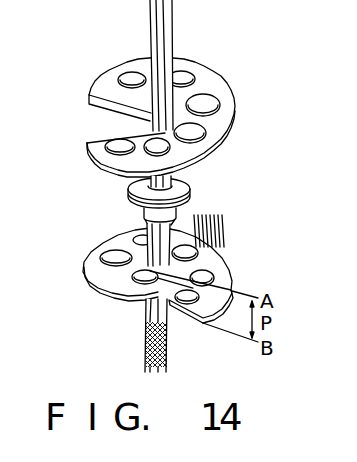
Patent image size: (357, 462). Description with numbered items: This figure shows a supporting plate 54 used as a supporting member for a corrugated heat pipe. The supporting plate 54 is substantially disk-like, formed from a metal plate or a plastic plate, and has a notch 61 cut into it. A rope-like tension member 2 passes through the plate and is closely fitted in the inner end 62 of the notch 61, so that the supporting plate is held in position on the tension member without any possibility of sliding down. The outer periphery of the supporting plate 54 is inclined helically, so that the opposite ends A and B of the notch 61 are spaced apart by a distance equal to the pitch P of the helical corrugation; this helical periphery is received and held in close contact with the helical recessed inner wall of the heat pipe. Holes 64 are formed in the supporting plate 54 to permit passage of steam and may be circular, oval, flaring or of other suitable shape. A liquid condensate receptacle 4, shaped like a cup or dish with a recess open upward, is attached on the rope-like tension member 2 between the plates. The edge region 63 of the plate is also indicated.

The rope-like tension member 2 is at (168, 15).
The liquid condensate receptacle 4 is at (139, 201).
The supporting plate 54 is at (146, 111).
The notch 61 is at (105, 111).
The inner end of notch 62 is at (182, 138).
The plate rim 63 is at (186, 142).
The holes 64 is at (207, 108).